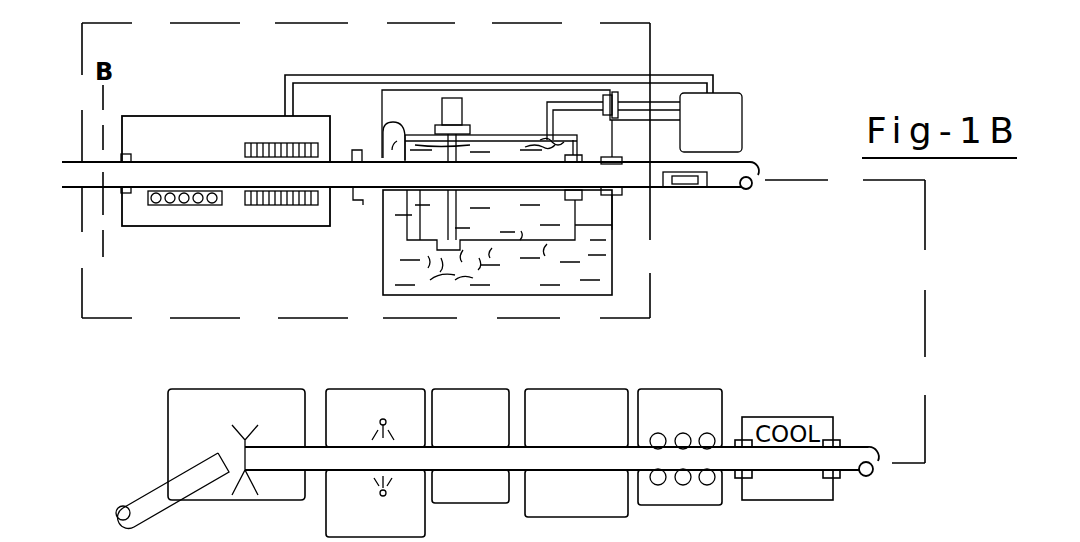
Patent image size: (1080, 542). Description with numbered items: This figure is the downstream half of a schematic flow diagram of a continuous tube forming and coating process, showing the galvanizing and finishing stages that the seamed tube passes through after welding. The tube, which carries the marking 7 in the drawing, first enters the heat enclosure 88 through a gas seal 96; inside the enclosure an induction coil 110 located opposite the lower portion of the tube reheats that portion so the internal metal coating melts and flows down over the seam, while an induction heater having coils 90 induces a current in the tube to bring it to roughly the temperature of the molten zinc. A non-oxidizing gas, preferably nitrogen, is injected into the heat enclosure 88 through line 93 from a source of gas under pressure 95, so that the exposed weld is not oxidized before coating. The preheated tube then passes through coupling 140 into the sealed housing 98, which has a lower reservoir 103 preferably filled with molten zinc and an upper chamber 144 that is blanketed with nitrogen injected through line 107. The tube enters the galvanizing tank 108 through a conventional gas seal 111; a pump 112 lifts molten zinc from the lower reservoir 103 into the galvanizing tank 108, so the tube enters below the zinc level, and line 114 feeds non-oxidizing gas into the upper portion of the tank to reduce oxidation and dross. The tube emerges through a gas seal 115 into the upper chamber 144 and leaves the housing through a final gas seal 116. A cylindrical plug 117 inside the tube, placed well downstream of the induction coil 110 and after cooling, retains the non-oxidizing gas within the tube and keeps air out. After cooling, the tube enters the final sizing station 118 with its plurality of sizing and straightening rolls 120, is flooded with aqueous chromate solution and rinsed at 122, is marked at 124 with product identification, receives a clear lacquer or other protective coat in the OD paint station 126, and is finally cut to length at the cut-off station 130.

The tubular strip / pipe 7 is at (350, 128).
The heat enclosure 88 is at (225, 116).
The induction heater coils 90 is at (225, 239).
The line 93 is at (386, 76).
The source of gas under pressure 95 is at (711, 122).
The gas seal 96 is at (130, 154).
The sealed housing 98 is at (372, 300).
The lower reservoir 103 is at (548, 283).
The line 107 is at (660, 165).
The galvanizing tank 108 is at (600, 276).
The induction coil 110 is at (160, 205).
The gas seal 111 is at (405, 140).
The pump 112 is at (462, 112).
The line 114 is at (570, 102).
The gas seal 115 is at (560, 196).
The final gas seal 116 is at (614, 203).
The cylindrical plug 117 is at (715, 163).
The final sizing station 118 is at (680, 446).
The sizing and straightening rolls 120 is at (707, 486).
The chromate and rinse station 122 is at (604, 390).
The marking station 124 is at (466, 390).
The OD paint station 126 is at (382, 355).
The cut-off station 130 is at (282, 389).
The coupling 140 is at (356, 205).
The upper chamber 144 is at (473, 105).